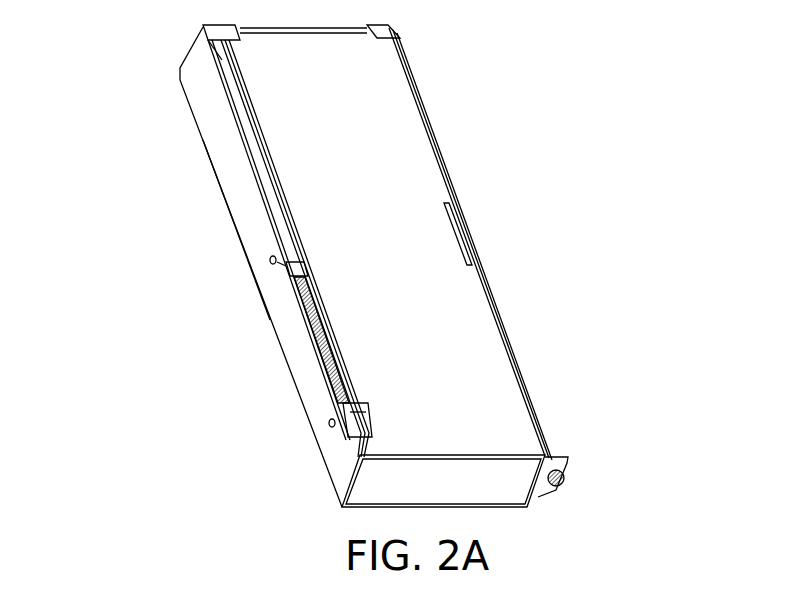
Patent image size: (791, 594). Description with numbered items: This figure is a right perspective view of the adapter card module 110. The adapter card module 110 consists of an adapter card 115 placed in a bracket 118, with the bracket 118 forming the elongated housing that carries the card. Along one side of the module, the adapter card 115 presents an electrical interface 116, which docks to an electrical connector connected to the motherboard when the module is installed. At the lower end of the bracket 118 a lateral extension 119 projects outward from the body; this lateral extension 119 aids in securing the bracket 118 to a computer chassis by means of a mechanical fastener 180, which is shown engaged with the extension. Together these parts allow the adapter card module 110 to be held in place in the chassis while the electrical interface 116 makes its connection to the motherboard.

The adapter card module 110 is at (146, 158).
The bracket 118 is at (248, 237).
The electrical interface 116 is at (300, 355).
The adapter card 115 is at (335, 410).
The lateral extension 119 is at (570, 462).
The mechanical fastener 180 is at (565, 490).